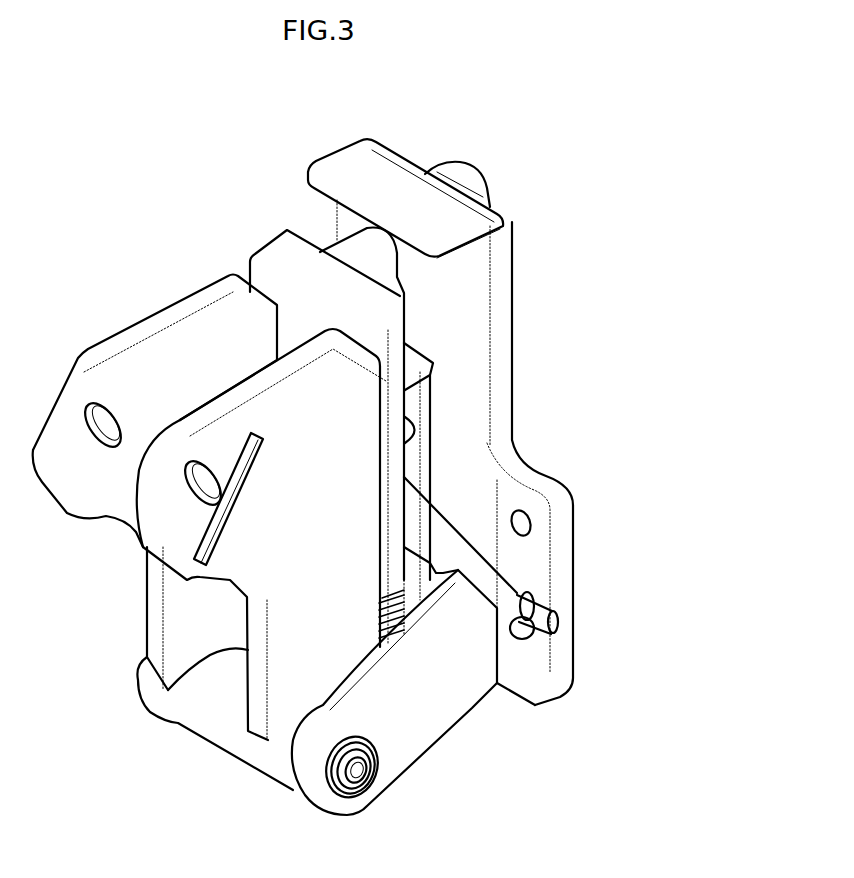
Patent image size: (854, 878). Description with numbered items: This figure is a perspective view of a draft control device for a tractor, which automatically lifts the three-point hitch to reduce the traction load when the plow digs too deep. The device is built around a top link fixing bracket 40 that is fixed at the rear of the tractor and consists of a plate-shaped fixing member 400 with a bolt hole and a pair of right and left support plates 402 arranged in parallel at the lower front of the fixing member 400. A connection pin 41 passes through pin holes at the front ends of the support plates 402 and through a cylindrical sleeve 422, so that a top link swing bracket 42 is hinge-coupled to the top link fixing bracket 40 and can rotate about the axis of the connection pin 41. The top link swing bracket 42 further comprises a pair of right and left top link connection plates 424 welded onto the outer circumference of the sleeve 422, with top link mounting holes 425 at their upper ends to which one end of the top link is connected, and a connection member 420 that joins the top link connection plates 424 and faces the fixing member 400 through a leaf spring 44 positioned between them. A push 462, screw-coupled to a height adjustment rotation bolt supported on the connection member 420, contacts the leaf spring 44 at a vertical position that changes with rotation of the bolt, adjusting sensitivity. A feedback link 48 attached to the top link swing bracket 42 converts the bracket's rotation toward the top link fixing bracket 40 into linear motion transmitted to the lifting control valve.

The top link fixing bracket 40 is at (653, 373).
The fixing member 400 is at (503, 387).
The support plates 402 is at (483, 668).
The connection pin 41 is at (373, 780).
The top link swing bracket 42 is at (247, 167).
The connection member 420 is at (250, 253).
The sleeve 422 is at (203, 713).
The top link connection plates 424 is at (213, 393).
The top link mounting holes 425 is at (200, 477).
The leaf spring 44 is at (437, 437).
The push 462 is at (420, 425).
The feedback link 48 is at (493, 610).